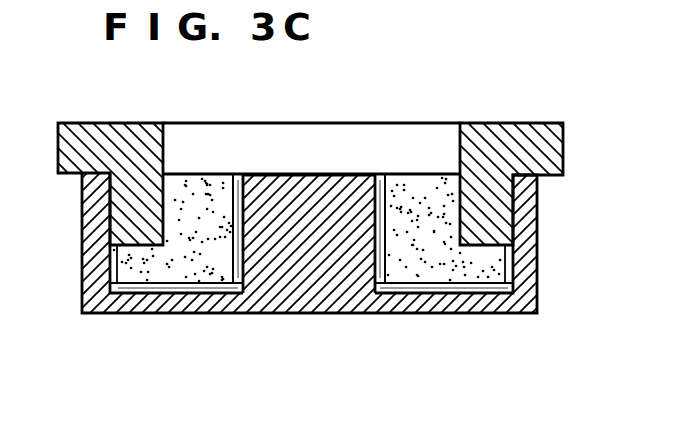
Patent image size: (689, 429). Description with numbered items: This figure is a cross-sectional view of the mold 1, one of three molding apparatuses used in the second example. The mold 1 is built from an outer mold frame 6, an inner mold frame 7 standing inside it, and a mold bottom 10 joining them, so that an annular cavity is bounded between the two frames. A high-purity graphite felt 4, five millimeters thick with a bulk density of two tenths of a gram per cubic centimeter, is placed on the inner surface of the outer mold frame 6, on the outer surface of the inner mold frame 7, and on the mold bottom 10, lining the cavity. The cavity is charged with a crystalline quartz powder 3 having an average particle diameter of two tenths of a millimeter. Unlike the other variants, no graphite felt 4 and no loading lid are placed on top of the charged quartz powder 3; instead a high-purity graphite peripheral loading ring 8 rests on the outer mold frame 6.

The mold 1 is at (312, 162).
The crystalline quartz powder 3 is at (425, 255).
The high-purity graphite felt 4 is at (230, 237).
The outer mold frame 6 is at (525, 230).
The inner mold frame 7 is at (318, 272).
The high-purity graphite peripheral loading ring 8 is at (503, 140).
The mold bottom 10 is at (142, 286).